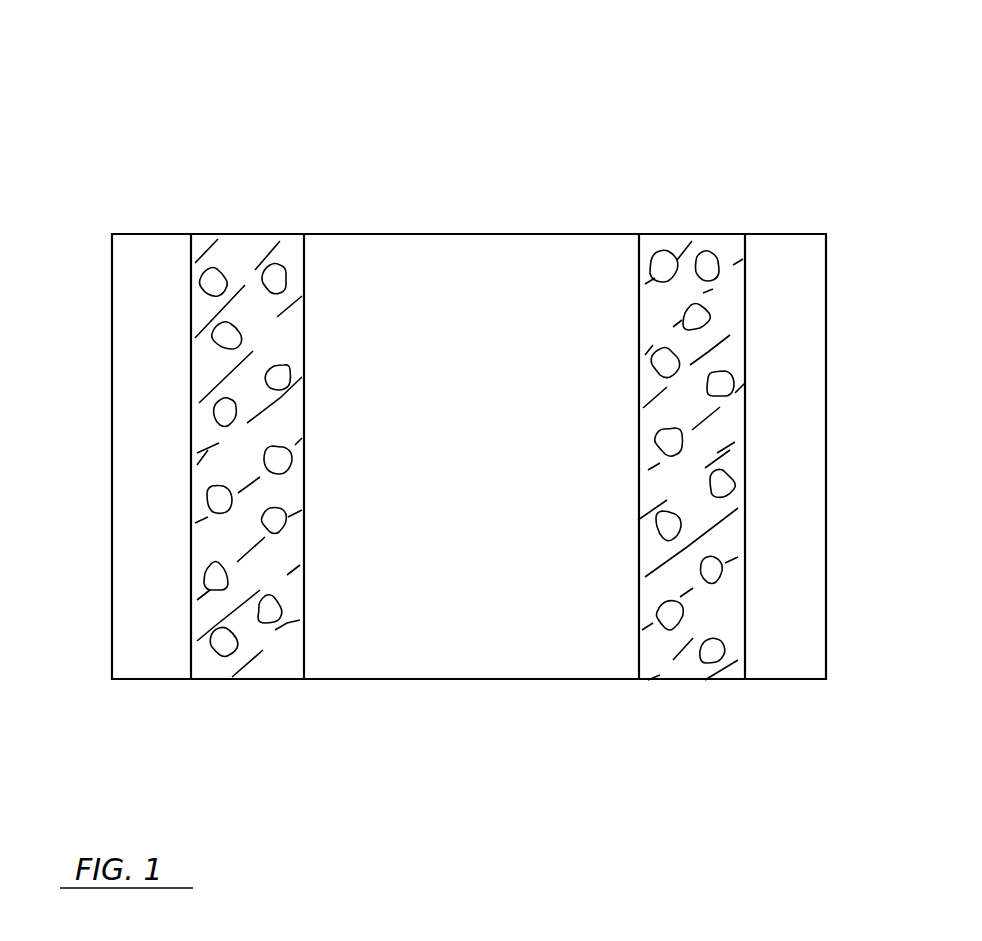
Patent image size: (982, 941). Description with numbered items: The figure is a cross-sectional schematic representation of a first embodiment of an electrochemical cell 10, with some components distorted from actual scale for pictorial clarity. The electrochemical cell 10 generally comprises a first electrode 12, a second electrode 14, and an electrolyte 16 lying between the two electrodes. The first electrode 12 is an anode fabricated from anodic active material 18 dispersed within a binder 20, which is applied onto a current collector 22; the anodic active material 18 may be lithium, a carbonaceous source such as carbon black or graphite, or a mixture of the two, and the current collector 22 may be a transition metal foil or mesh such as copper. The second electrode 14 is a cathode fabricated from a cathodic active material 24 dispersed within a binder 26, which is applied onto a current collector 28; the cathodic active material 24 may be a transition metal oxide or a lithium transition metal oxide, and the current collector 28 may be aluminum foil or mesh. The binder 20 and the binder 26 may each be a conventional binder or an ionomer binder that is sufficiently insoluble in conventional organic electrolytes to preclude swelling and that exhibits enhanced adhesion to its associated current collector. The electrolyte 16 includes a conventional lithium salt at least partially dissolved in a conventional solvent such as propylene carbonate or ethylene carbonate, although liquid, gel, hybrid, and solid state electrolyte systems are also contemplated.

The electrochemical cell 10 is at (638, 110).
The first electrode 12 is at (109, 707).
The second electrode 14 is at (637, 707).
The electrolyte 16 is at (460, 682).
The anodic active material 18 is at (246, 460).
The binder 20 is at (248, 268).
The current collector 22 is at (146, 233).
The cathodic active material 24 is at (692, 456).
The binder 26 is at (664, 334).
The current collector 28 is at (785, 233).